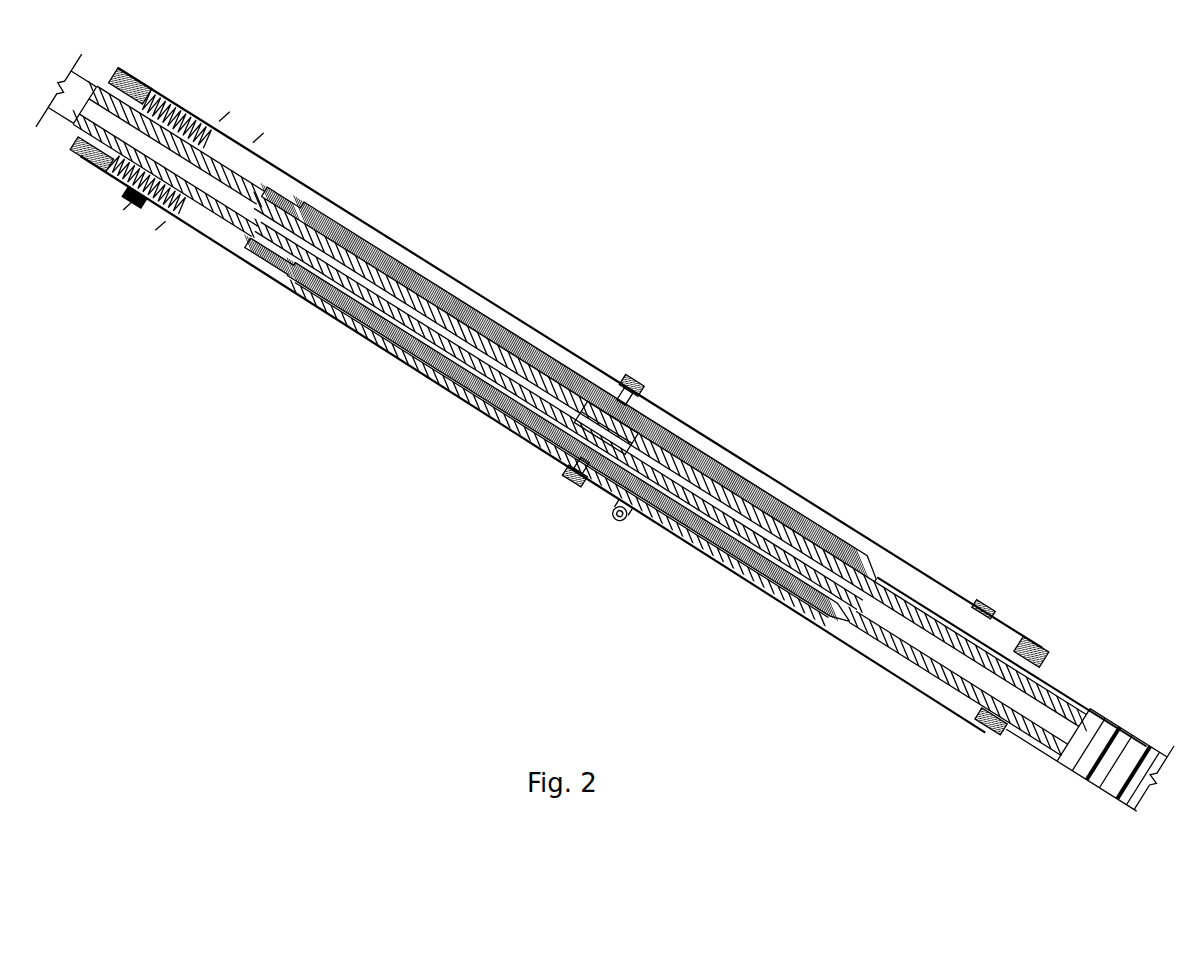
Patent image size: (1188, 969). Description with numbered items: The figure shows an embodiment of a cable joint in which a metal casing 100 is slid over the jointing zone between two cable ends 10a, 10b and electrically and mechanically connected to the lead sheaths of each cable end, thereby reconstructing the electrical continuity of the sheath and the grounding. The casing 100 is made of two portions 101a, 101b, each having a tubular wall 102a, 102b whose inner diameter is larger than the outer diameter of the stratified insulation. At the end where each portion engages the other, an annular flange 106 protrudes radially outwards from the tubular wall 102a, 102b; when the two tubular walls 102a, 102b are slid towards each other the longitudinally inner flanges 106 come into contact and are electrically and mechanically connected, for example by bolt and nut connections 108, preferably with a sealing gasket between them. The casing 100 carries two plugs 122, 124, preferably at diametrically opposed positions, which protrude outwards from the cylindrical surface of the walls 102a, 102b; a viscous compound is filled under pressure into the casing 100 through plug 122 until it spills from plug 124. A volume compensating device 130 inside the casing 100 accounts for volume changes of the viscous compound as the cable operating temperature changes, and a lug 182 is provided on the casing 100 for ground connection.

The cable end 10a is at (53, 162).
The cable end 10b is at (1028, 787).
The metal casing 100 is at (608, 429).
The casing portion 101a is at (436, 217).
The casing portion 101b is at (862, 444).
The tubular wall 102a is at (506, 310).
The tubular wall 102b is at (733, 452).
The annular flange 106 is at (634, 370).
The bolt and nut connection 108 is at (648, 385).
The plug 122 is at (137, 204).
The plug 124 is at (977, 608).
The volume compensating device 130 is at (202, 127).
The lug 182 is at (622, 522).